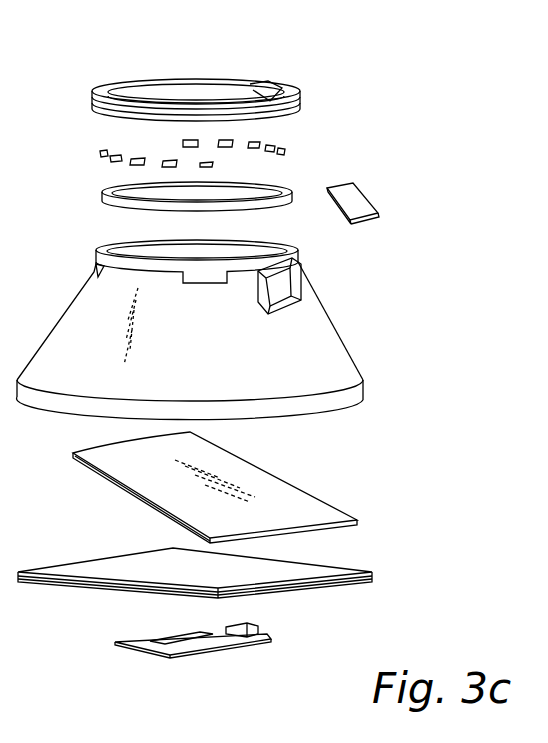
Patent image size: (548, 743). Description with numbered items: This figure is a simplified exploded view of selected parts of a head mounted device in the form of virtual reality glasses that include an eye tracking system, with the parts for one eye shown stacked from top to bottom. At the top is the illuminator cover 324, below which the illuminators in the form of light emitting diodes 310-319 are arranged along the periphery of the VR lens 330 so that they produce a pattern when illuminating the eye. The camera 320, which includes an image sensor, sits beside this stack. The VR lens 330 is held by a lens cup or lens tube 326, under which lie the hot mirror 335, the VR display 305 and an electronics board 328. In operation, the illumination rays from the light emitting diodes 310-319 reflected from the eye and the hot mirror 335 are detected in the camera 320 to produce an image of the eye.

The illuminator cover 324 is at (282, 88).
The light emitting diodes 310-319 is at (268, 147).
The camera 320 is at (353, 203).
The VR lens 330 is at (279, 205).
The lens cup or lens tube 326 is at (346, 361).
The hot mirror 335 is at (303, 504).
The VR display 305 is at (343, 577).
The electronics board 328 is at (230, 643).